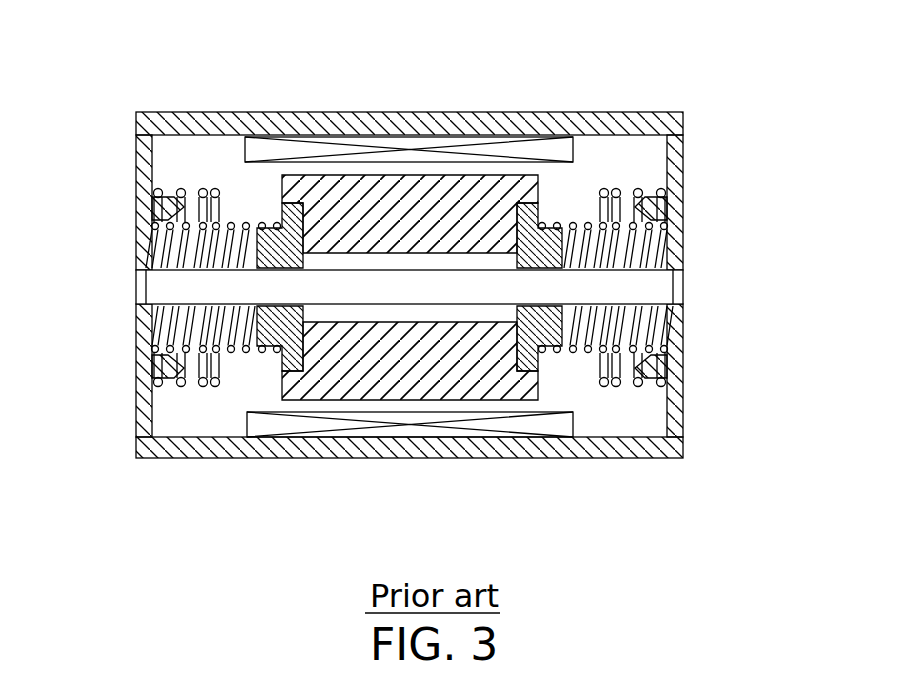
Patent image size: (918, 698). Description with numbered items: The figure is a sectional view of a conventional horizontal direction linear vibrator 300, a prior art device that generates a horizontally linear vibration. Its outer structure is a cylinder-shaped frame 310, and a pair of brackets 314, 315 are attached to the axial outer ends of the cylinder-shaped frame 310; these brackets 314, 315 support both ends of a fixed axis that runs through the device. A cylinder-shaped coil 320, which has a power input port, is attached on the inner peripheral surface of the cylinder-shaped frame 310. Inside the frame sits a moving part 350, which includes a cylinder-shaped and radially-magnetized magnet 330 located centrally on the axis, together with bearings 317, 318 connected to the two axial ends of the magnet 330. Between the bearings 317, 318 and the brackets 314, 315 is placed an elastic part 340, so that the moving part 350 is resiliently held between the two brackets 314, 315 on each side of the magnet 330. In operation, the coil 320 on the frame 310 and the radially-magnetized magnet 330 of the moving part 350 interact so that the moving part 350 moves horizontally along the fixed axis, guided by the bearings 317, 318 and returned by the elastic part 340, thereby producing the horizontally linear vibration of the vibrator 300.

The linear vibrator 300 is at (404, 272).
The cylinder-shaped frame 310 is at (682, 119).
The bracket 314 is at (152, 391).
The bracket 315 is at (673, 405).
The bearing 317 is at (258, 352).
The bearing 318 is at (518, 368).
The cylinder-shaped coil 320 is at (470, 148).
The magnet 330 is at (345, 195).
The elastic part 340 is at (683, 210).
The moving part 350 is at (338, 398).